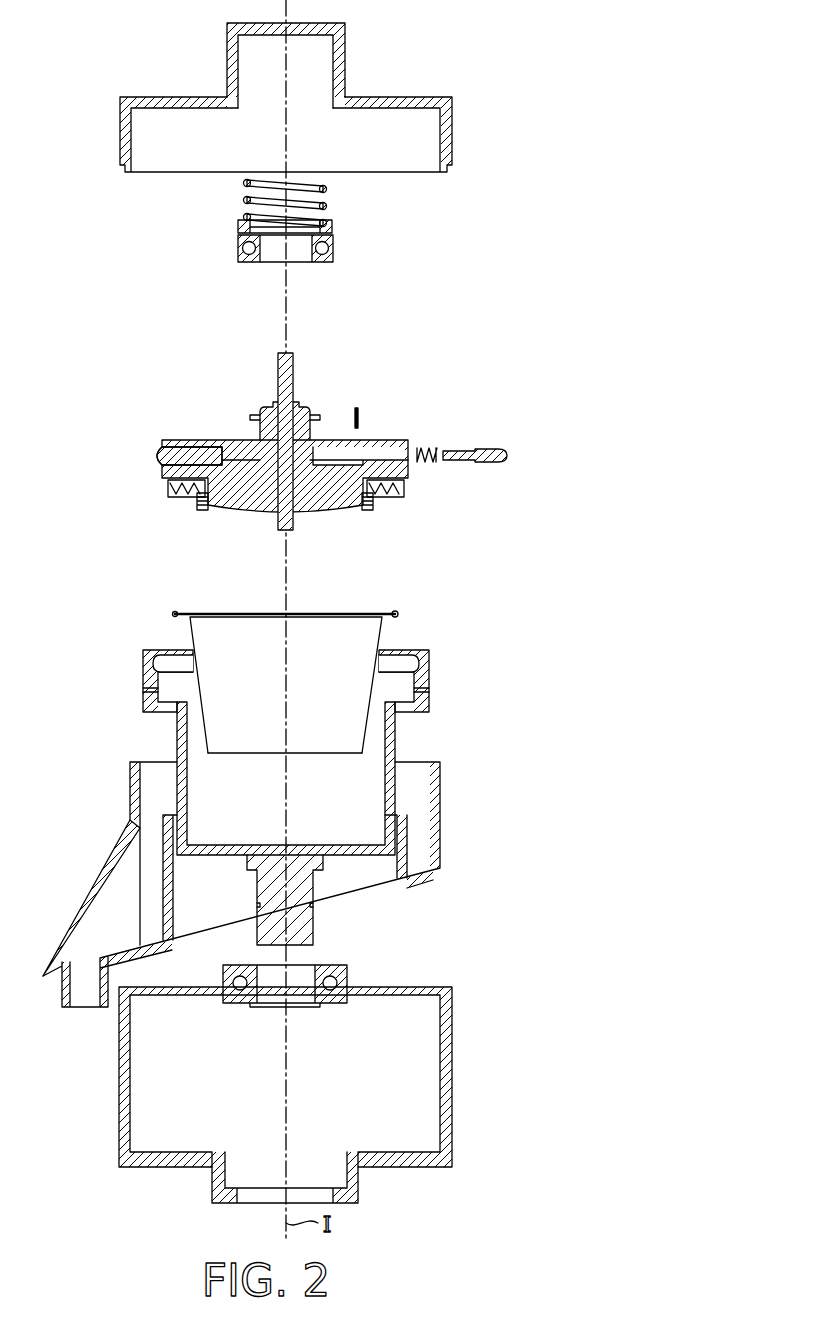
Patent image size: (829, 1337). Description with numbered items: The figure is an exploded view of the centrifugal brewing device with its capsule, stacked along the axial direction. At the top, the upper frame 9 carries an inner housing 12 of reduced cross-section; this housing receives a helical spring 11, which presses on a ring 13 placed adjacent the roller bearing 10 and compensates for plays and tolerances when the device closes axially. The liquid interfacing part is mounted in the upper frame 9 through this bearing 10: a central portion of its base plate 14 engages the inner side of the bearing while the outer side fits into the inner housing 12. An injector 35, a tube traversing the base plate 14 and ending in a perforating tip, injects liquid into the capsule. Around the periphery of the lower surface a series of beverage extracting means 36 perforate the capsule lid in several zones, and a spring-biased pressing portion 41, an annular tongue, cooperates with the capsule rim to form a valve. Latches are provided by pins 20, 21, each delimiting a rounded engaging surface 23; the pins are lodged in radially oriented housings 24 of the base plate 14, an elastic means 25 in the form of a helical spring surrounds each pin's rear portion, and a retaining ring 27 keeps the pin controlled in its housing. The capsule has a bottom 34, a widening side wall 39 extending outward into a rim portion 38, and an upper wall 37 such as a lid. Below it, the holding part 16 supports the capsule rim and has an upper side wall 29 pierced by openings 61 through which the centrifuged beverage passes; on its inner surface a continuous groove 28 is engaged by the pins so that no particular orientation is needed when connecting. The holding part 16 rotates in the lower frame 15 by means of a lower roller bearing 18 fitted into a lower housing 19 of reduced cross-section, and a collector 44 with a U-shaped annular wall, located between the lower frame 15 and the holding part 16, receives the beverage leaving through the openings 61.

The upper frame 9 is at (437, 97).
The inner housing 12 is at (345, 40).
The helical spring 11 is at (330, 188).
The ring 13 is at (243, 222).
The roller bearing 10 is at (333, 251).
The injector 35 is at (274, 523).
The base plate 14 is at (258, 443).
The housings 24 is at (400, 460).
The pin 21 is at (153, 453).
The spring-biased pressing portion 41 is at (165, 486).
The beverage extracting means 36 is at (366, 510).
The retaining ring 27 is at (357, 406).
The elastic means 25 is at (428, 447).
The engaging surface 23 is at (508, 456).
The pin 20 is at (494, 431).
The upper wall 37 is at (316, 610).
The rim portion 38 is at (398, 608).
The side wall 39 is at (383, 630).
The bottom 34 is at (238, 760).
The groove 28 is at (167, 650).
The upper side wall 29 is at (430, 662).
The openings 61 is at (143, 686).
The holding part 16 is at (397, 740).
The collector 44 is at (441, 790).
The lower roller bearing 18 is at (347, 970).
The lower frame 15 is at (435, 1167).
The lower housing 19 is at (210, 1180).